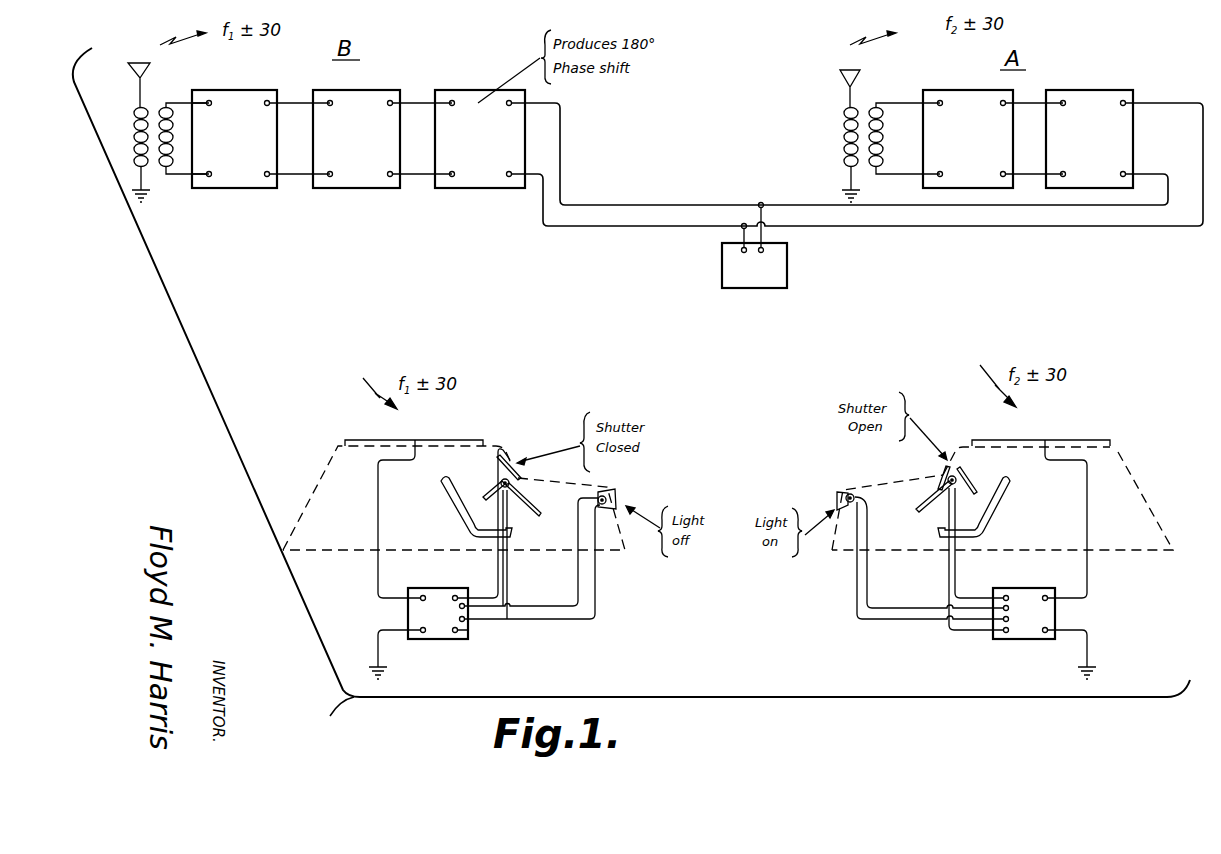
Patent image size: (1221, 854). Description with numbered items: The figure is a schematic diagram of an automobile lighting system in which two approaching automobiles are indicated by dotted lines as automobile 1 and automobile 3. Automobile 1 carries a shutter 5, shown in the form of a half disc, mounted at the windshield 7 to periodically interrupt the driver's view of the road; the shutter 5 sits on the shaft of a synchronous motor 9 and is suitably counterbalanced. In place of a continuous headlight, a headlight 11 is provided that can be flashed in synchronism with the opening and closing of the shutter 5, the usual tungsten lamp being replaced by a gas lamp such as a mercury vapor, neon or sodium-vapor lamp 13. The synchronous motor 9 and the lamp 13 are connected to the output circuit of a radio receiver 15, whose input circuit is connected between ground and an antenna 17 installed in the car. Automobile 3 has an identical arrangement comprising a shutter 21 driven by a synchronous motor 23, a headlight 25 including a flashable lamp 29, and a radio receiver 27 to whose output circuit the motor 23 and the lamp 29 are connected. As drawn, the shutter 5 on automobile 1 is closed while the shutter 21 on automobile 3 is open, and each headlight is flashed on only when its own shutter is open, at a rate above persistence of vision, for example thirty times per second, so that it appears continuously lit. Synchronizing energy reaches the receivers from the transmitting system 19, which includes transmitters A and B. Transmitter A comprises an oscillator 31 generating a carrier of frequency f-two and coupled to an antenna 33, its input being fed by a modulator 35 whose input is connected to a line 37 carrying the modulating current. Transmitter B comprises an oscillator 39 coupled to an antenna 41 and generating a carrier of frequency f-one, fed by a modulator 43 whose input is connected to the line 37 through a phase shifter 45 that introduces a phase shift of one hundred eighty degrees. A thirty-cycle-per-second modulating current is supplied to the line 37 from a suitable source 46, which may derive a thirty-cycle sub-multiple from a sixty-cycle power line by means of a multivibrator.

The automobile 1 is at (323, 477).
The automobile 3 is at (1132, 471).
The shutter 5 is at (503, 455).
The windshield 7 is at (517, 456).
The synchronous motor 9 is at (517, 490).
The headlight 11 is at (648, 505).
The lamp 13 is at (610, 495).
The radio receiver 15 is at (440, 631).
The antenna 17 is at (367, 440).
The transmitting system 19 is at (722, 167).
The shutter 21 is at (938, 479).
The synchronous motor 23 is at (956, 471).
The headlight 25 is at (828, 505).
The radio receiver 27 is at (1025, 630).
The lamp 29 is at (845, 492).
The oscillator 31 is at (978, 106).
The antenna 33 is at (843, 72).
The modulator 35 is at (1085, 105).
The line 37 is at (880, 205).
The oscillator 39 is at (238, 175).
The antenna 41 is at (137, 63).
The modulator 43 is at (350, 178).
The phase shifter 45 is at (468, 172).
The source 46 is at (780, 257).